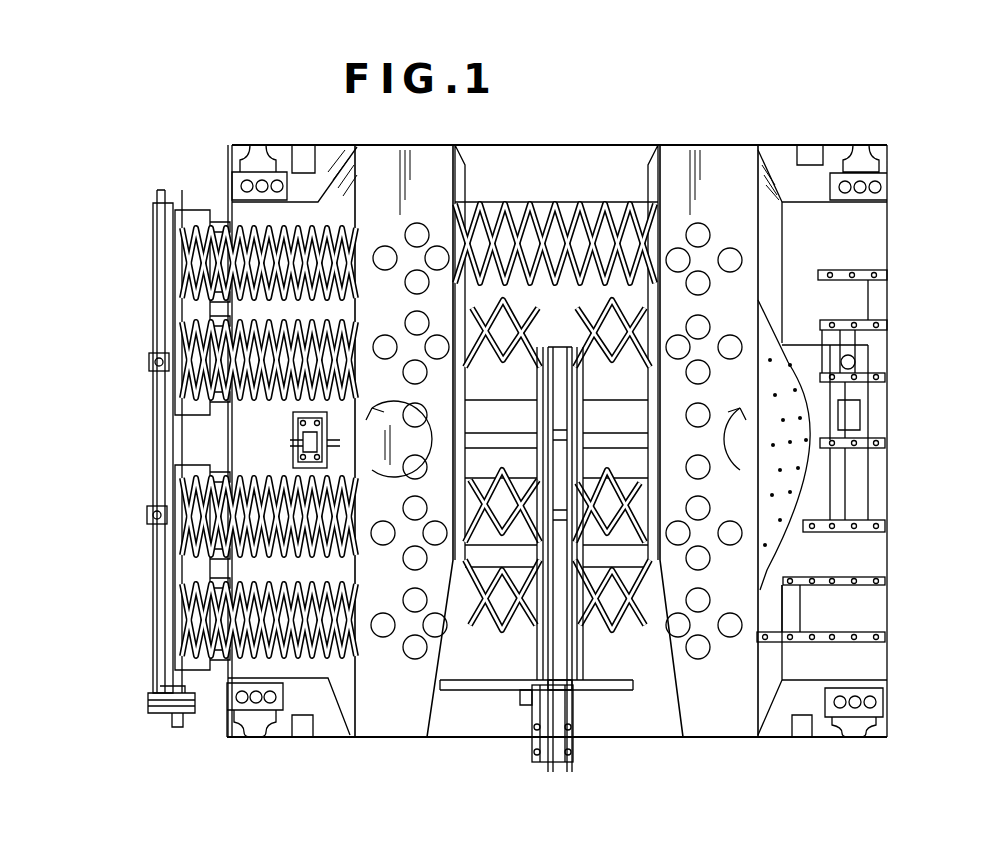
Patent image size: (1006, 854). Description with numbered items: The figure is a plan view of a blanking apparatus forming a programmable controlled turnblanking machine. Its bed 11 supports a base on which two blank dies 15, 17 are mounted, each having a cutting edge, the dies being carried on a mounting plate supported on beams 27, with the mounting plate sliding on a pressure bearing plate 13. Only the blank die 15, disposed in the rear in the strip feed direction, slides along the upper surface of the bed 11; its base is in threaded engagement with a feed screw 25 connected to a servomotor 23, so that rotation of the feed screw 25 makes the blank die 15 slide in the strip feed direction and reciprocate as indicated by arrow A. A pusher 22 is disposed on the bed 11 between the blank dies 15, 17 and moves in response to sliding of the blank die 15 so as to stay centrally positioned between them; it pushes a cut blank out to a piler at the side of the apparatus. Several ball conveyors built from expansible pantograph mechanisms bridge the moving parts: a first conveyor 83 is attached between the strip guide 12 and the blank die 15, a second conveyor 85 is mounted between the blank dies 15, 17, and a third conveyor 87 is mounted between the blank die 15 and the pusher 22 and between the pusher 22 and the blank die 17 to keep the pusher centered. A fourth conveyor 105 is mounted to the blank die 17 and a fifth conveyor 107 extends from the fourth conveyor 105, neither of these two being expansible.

The bed 11 is at (452, 720).
The strip guide 12 is at (153, 528).
The pressure bearing plate 13 is at (320, 192).
The blank die 15 is at (407, 210).
The blank die 17 is at (700, 195).
The pusher 22 is at (540, 768).
The servomotor 23 is at (293, 438).
The feed screw 25 is at (603, 440).
The beams 27 is at (517, 320).
The first conveyor 83 is at (200, 230).
The second conveyor 85 is at (548, 205).
The third conveyor 87 is at (496, 630).
The fourth conveyor 105 is at (806, 360).
The fifth conveyor 107 is at (828, 270).
The arrow A is at (640, 136).